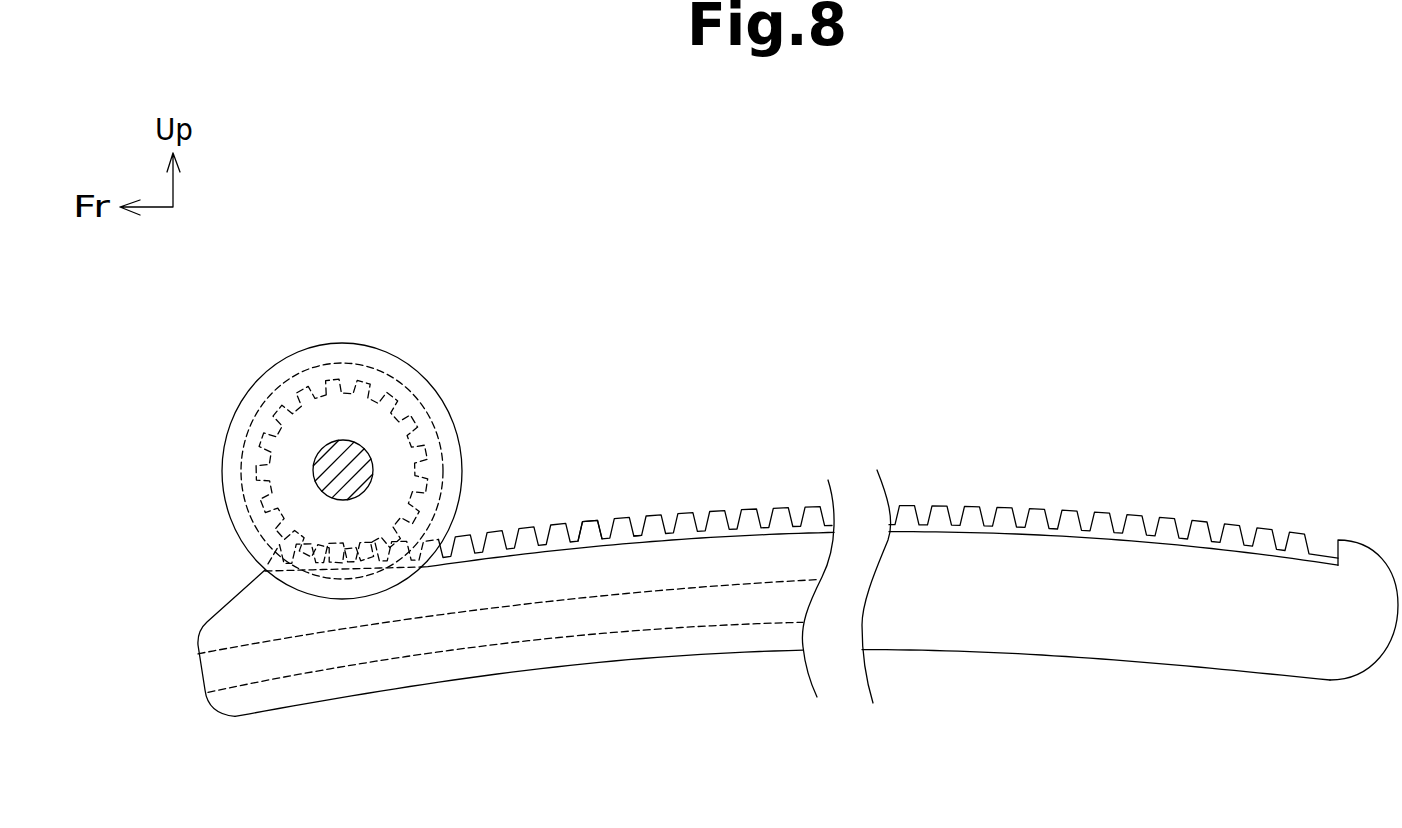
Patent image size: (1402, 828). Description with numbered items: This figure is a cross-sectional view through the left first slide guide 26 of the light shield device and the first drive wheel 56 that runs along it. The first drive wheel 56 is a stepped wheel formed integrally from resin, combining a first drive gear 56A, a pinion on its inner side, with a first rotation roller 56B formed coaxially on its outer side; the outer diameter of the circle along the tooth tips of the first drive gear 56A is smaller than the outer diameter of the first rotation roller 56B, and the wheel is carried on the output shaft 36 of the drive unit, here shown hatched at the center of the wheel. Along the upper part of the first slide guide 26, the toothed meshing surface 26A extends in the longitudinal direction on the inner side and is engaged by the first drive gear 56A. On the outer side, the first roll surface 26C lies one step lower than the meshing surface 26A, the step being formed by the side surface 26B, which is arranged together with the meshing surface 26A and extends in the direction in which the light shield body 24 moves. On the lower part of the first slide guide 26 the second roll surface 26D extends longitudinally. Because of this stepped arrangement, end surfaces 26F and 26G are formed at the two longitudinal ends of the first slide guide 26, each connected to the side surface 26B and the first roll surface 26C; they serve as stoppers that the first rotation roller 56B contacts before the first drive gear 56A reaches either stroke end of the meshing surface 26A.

The light shield body 24 is at (373, 663).
The first slide guide 26 is at (975, 670).
The meshing surface 26A is at (592, 522).
The side surface 26B is at (658, 533).
The first roll surface 26C is at (707, 537).
The second roll surface 26D is at (642, 660).
The end surface 26F is at (293, 577).
The end surface 26G is at (1334, 547).
The output shaft 36 is at (313, 460).
The first drive wheel 56 is at (423, 272).
The first drive gear 56A is at (333, 373).
The first rotation roller 56B is at (393, 363).